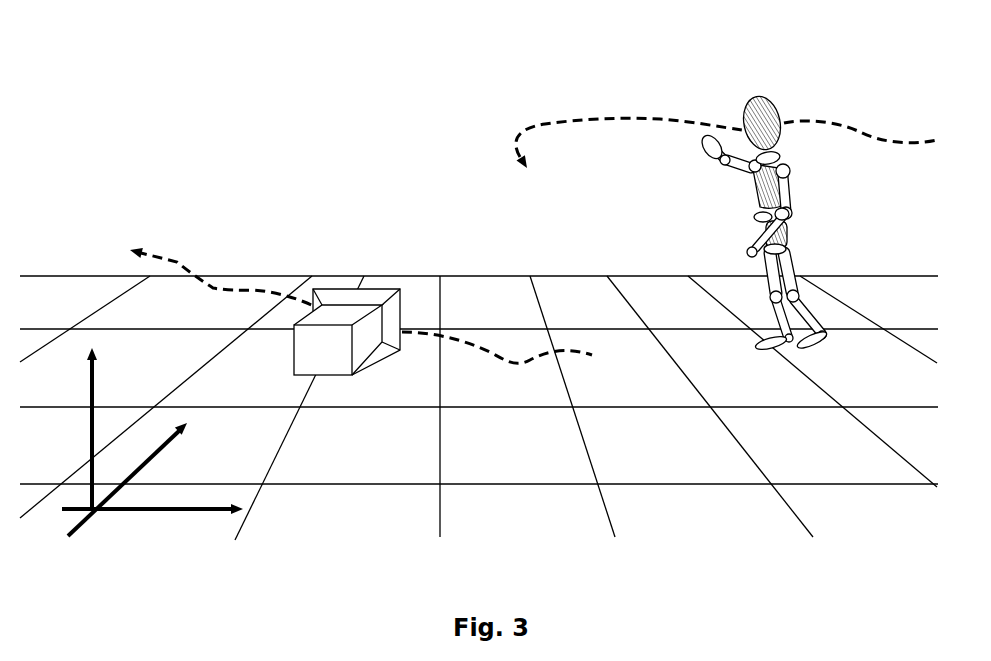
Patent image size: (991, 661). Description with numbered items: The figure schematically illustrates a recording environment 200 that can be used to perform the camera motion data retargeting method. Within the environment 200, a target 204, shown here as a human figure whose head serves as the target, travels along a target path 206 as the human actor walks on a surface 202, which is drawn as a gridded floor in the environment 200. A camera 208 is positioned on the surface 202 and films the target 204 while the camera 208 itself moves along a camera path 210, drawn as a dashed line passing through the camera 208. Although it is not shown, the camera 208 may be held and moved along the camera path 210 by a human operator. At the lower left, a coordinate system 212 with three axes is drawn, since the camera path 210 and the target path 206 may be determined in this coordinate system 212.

The recording environment 200 is at (150, 66).
The surface 202 is at (803, 461).
The target 204 is at (776, 104).
The target path 206 is at (628, 118).
The camera 208 is at (294, 357).
The camera path 210 is at (190, 267).
The coordinate system 212 is at (132, 515).